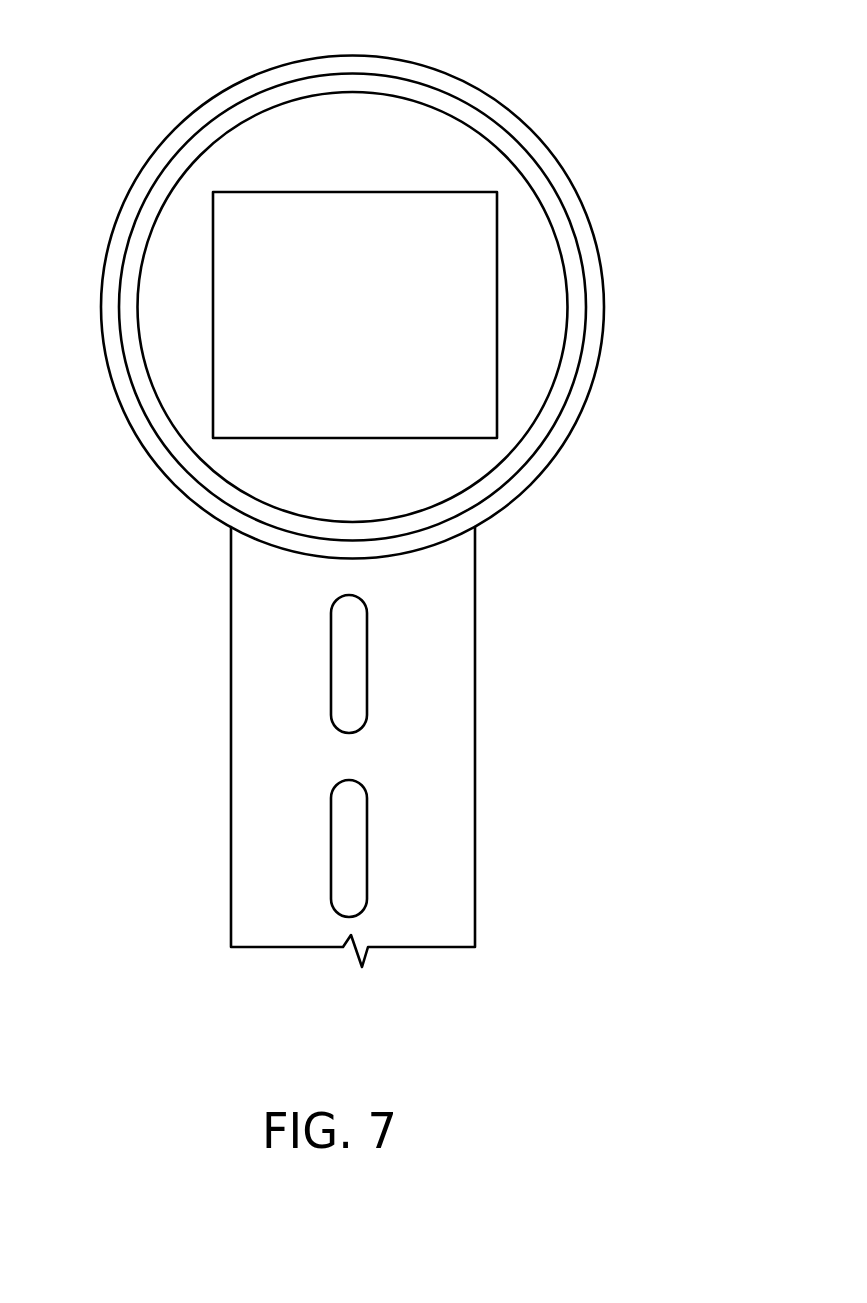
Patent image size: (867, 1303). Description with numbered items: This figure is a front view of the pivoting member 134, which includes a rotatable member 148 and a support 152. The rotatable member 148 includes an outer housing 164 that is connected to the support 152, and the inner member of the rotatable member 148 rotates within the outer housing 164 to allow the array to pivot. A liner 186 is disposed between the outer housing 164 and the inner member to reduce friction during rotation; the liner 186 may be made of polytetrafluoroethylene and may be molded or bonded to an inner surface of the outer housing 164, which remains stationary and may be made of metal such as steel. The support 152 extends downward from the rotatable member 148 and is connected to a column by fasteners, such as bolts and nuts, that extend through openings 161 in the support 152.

The pivoting member 134 is at (373, 512).
The rotatable member 148 is at (177, 272).
The support 152 is at (443, 769).
The openings 161 is at (342, 690).
The outer housing 164 is at (540, 140).
The liner 186 is at (567, 368).